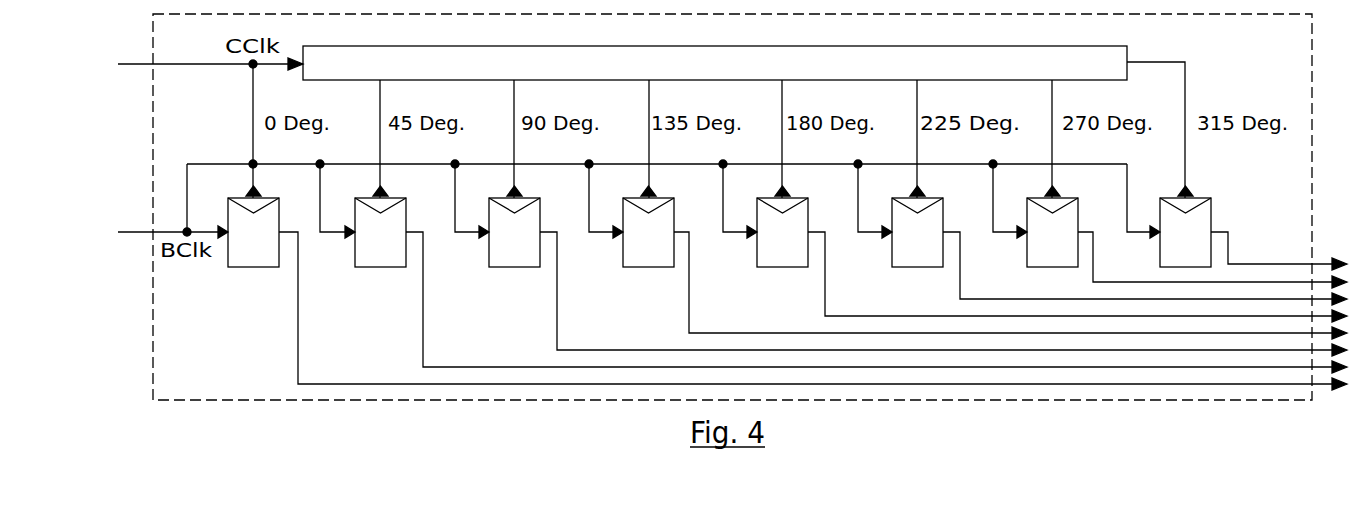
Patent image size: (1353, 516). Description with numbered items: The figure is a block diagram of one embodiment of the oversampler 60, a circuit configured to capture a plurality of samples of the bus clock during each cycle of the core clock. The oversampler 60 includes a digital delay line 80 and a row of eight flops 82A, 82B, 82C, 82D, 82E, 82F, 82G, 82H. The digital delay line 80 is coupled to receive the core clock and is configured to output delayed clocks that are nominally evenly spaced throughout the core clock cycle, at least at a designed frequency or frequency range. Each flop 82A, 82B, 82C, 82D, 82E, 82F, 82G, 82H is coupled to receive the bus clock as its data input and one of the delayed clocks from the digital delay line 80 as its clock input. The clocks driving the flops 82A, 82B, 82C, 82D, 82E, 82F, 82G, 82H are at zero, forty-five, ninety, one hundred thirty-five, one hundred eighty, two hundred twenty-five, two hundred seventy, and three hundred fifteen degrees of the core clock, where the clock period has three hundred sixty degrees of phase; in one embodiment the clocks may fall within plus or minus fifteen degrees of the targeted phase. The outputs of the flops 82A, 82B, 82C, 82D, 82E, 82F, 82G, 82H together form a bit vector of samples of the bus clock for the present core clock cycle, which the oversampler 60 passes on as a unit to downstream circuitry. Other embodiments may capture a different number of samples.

The oversampler 60 is at (1305, 45).
The digital delay line 80 is at (787, 75).
The flop 82A is at (253, 268).
The flop 82B is at (380, 268).
The flop 82C is at (514, 268).
The flop 82D is at (649, 268).
The flop 82E is at (782, 268).
The flop 82F is at (917, 268).
The flop 82G is at (1052, 268).
The flop 82H is at (1212, 212).